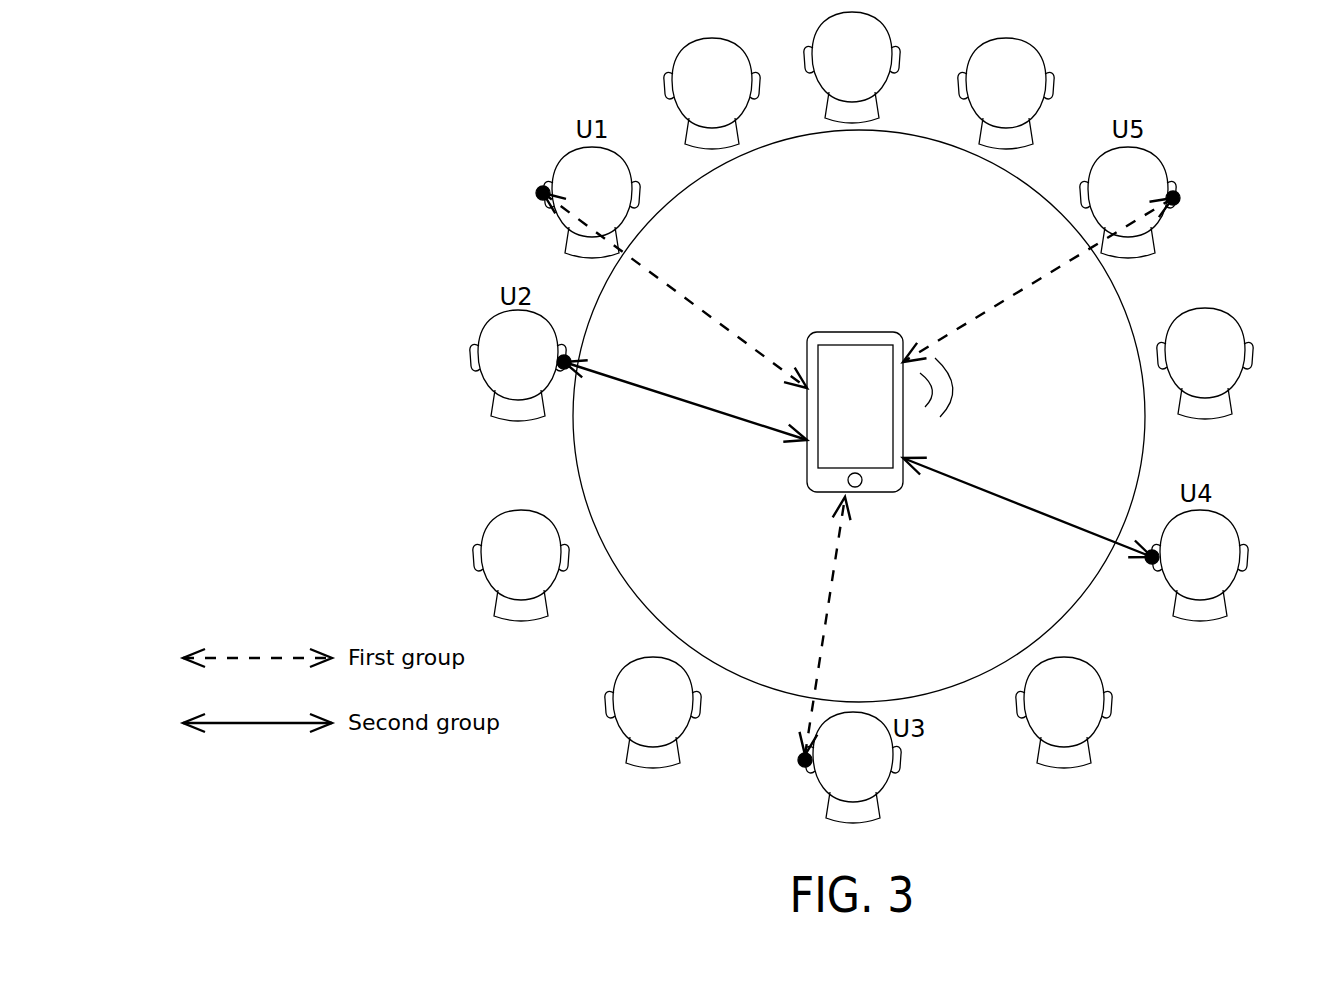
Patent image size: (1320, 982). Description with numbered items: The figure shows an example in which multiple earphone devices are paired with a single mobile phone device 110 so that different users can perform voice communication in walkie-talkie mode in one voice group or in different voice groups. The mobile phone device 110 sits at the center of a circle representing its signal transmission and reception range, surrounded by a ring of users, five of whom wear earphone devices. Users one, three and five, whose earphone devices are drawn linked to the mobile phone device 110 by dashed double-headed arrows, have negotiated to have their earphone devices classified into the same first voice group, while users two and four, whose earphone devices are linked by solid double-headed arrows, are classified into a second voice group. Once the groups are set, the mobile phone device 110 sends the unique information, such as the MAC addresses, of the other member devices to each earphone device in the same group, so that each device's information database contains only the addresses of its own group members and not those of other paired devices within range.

The mobile phone device 110 is at (853, 332).